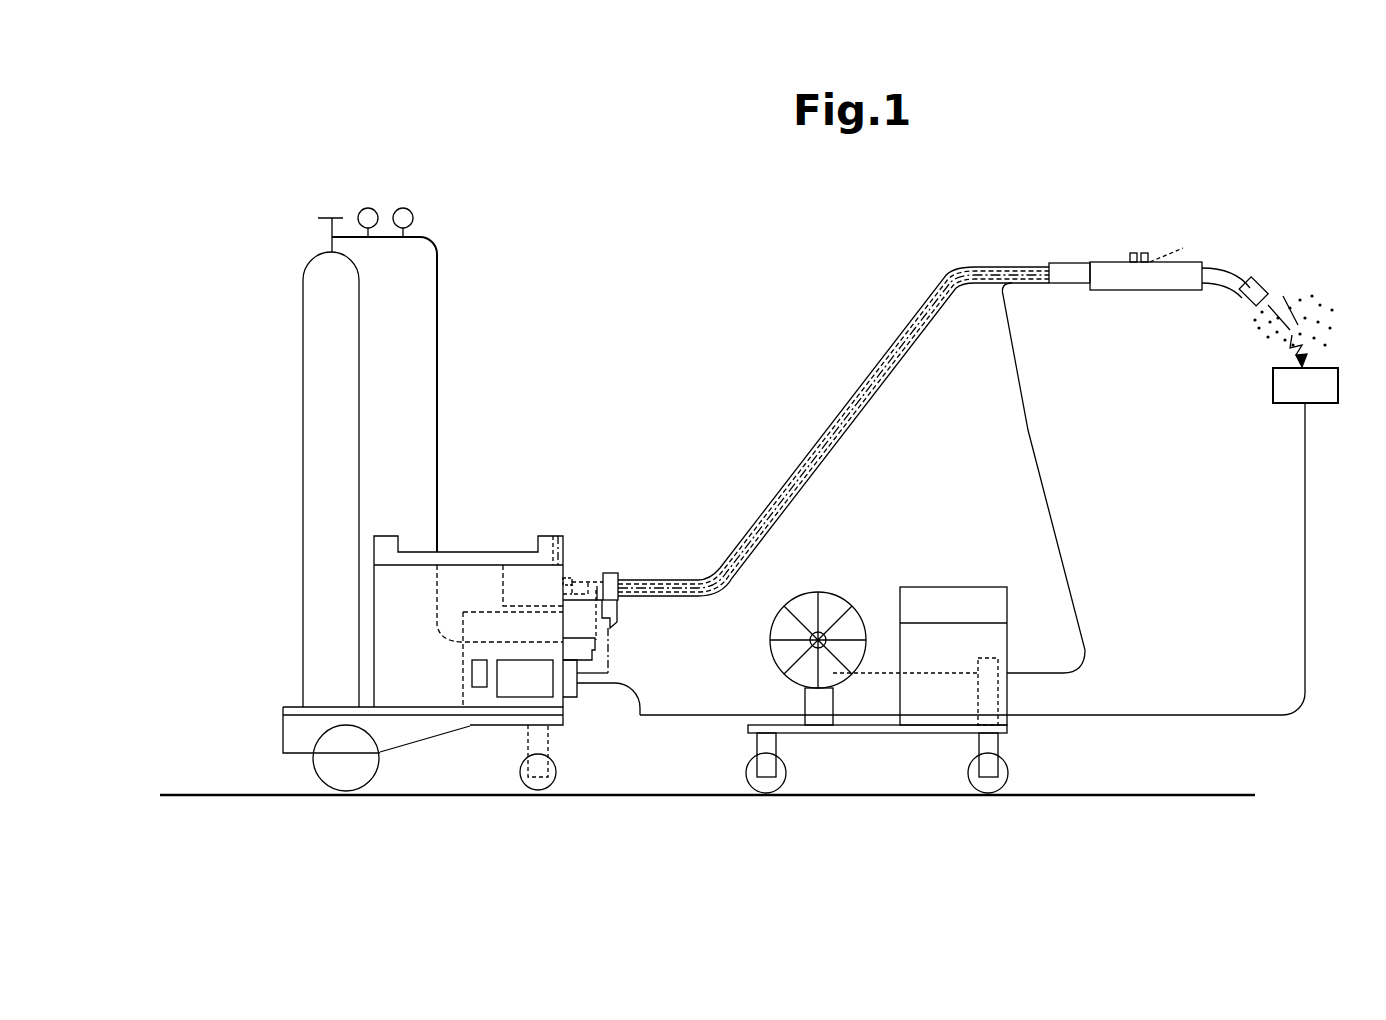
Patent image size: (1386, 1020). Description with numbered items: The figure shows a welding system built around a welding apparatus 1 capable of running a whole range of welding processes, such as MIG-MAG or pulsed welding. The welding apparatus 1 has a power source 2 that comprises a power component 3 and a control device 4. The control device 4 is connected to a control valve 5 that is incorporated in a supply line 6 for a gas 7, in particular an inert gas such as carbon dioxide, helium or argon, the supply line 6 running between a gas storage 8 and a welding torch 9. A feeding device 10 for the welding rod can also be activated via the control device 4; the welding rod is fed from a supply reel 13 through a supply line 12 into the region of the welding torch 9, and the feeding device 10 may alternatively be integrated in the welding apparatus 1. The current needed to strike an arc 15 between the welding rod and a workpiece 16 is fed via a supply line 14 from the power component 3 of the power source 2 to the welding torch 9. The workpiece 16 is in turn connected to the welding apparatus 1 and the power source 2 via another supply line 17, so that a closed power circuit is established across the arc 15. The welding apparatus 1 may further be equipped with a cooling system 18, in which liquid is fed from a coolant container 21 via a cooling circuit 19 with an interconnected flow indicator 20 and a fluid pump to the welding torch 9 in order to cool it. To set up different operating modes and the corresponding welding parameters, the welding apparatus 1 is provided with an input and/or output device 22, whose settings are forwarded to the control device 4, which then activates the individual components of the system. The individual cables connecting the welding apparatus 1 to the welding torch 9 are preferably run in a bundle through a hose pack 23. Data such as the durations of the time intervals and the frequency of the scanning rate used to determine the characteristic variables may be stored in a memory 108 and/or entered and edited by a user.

The welding apparatus 1 is at (236, 203).
The power source 2 is at (515, 430).
The power component 3 is at (515, 686).
The control device 4 is at (463, 676).
The control valve 5 is at (575, 655).
The supply line 6 is at (978, 283).
The gas 7 is at (1277, 280).
The gas storage 8 is at (330, 330).
The welding torch 9 is at (1193, 234).
The feeding device 10 is at (1055, 757).
The supply line 12 is at (1053, 500).
The supply reel 13 is at (830, 605).
The supply line 14 is at (920, 330).
The arc 15 is at (1280, 351).
The workpiece 16 is at (1313, 386).
The supply line 17 is at (1305, 575).
The cooling system 18 is at (488, 540).
The cooling circuit 19 is at (765, 505).
The flow indicator 20 is at (567, 580).
The coolant container 21 is at (523, 577).
The input and/or output device 22 is at (553, 547).
The hose pack 23 is at (668, 580).
The memory 108 is at (478, 692).